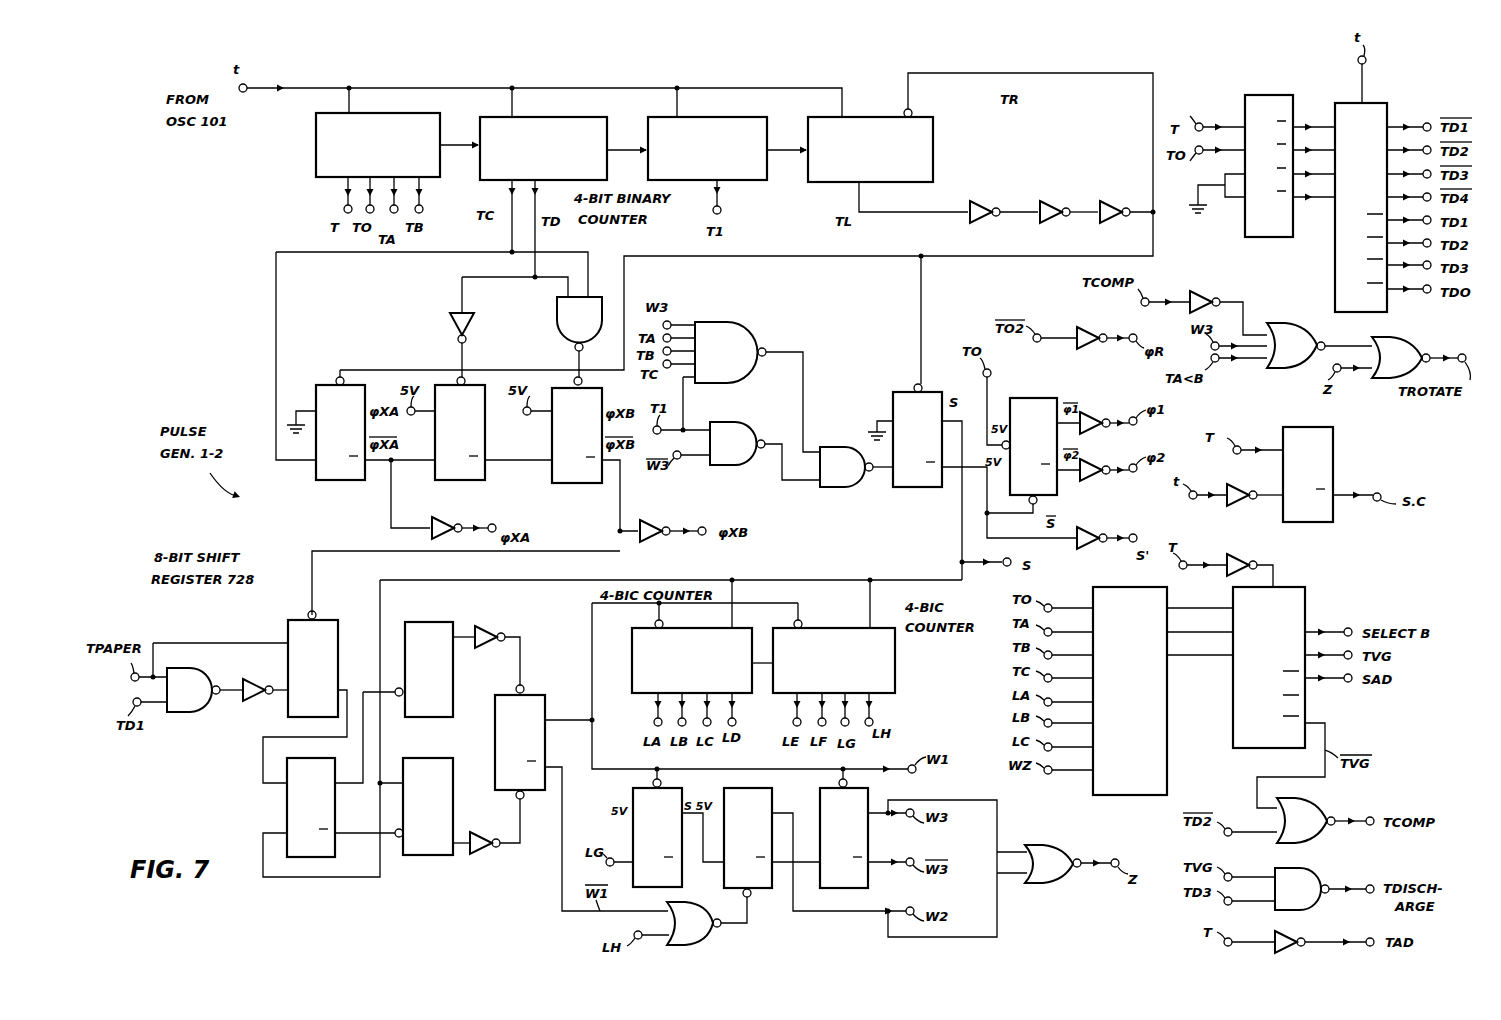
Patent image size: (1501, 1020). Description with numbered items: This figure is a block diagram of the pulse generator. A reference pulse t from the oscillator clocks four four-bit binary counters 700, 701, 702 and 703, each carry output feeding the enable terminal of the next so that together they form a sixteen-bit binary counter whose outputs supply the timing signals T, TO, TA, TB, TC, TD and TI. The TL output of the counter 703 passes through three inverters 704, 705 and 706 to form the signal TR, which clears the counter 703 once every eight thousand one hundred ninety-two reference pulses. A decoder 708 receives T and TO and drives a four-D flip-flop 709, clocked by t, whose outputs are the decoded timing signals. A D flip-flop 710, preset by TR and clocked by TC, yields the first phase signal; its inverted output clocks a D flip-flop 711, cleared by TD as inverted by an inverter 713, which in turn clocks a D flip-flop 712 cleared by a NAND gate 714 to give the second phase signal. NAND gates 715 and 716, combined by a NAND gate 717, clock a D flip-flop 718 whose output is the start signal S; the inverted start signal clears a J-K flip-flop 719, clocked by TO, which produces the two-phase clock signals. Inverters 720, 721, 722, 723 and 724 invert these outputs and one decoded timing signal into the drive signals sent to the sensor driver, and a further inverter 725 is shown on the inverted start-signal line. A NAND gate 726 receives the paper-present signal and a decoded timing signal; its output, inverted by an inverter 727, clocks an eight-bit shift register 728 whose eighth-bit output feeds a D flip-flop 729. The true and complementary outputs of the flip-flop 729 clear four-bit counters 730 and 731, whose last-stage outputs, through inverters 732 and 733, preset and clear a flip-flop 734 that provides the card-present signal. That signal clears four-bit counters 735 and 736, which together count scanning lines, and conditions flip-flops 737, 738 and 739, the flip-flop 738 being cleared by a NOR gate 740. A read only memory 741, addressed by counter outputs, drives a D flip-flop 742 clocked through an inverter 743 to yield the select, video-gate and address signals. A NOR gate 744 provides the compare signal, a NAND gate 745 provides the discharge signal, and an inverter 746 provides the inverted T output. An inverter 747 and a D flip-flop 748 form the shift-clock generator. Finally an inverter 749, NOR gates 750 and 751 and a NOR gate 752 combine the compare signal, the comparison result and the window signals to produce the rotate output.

The 4-bit binary counter 700 is at (316, 146).
The 4-bit binary counter 701 is at (573, 118).
The 4-bit binary counter 702 is at (733, 118).
The 4-bit binary counter 703 is at (856, 117).
The inverter 704 is at (982, 202).
The inverter 705 is at (1050, 202).
The inverter 706 is at (1110, 202).
The decoder 708 is at (1250, 95).
The 4-D flip-flop 709 is at (1378, 103).
The D flip-flop 710 is at (332, 480).
The D flip-flop 711 is at (456, 480).
The D flip-flop 712 is at (553, 483).
The inverter 713 is at (450, 325).
The NAND gate 714 is at (557, 312).
The NAND gate 715 is at (732, 326).
The NAND gate 716 is at (736, 465).
The NAND gate 717 is at (832, 487).
The D flip-flop 718 is at (918, 487).
The J-K flip-flop 719 is at (1020, 398).
The inverter 720 is at (440, 518).
The inverter 721 is at (655, 520).
The inverter 722 is at (1094, 432).
The inverter 723 is at (1096, 479).
The inverter 724 is at (1089, 330).
The inverter 725 is at (1092, 527).
The NAND gate 726 is at (186, 712).
The inverter 727 is at (250, 700).
The 8-bit shift register 728 is at (290, 626).
The D flip-flop 729 is at (302, 857).
The 4-bit counter 730 is at (417, 622).
The 4-bit counter 731 is at (410, 855).
The inverter 732 is at (490, 648).
The inverter 733 is at (484, 836).
The flip-flop 734 is at (495, 726).
The 4-bit counter 735 is at (632, 650).
The 4-bit counter 736 is at (895, 650).
The flip-flop 737 is at (633, 830).
The flip-flop 738 is at (766, 800).
The flip-flop 739 is at (864, 838).
The NOR gate 740 is at (702, 932).
The read only memory 741 is at (1160, 758).
The D flip-flop 742 is at (1233, 706).
The inverter 743 is at (1242, 554).
The NOR gate 744 is at (1307, 806).
The NAND gate 745 is at (1302, 870).
The inverter 746 is at (1292, 935).
The inverter 747 is at (1246, 484).
The D flip-flop 748 is at (1333, 434).
The inverter 749 is at (1200, 293).
The NOR gate 750 is at (1291, 330).
The NOR gate 751 is at (1396, 344).
The NOR gate 752 is at (1043, 880).